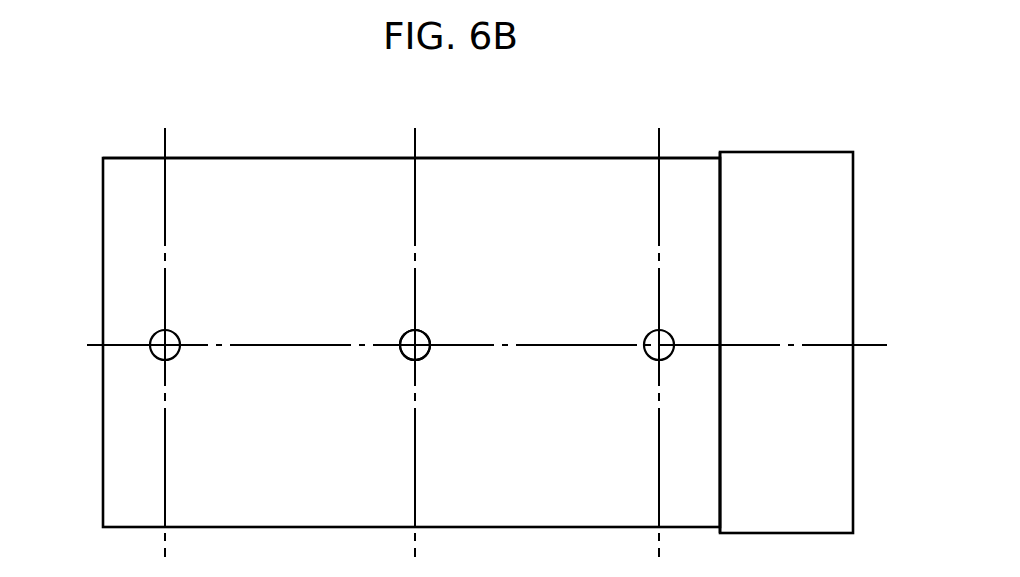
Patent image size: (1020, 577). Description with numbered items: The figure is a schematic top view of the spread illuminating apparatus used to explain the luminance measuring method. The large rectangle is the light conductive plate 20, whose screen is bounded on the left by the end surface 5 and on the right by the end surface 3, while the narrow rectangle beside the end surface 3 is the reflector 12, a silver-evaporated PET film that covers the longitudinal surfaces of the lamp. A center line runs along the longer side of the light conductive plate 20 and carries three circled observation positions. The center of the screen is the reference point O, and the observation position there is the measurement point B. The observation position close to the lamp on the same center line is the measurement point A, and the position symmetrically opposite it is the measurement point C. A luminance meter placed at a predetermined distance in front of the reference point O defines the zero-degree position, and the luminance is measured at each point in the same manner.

The end surface 5 is at (103, 212).
The light conductive plate 20 is at (574, 173).
The reflector 12 is at (820, 175).
The end surface 3 is at (721, 228).
The measurement point A is at (670, 332).
The measurement point B is at (403, 333).
The measurement point C is at (176, 332).
The reference point O is at (421, 336).